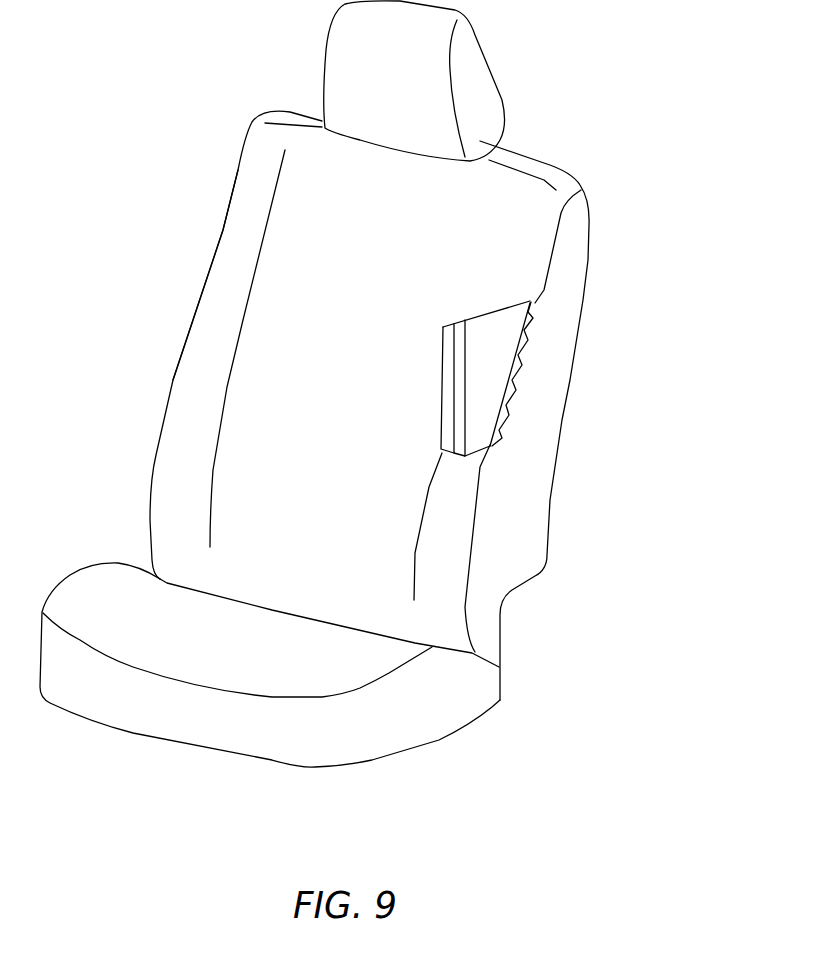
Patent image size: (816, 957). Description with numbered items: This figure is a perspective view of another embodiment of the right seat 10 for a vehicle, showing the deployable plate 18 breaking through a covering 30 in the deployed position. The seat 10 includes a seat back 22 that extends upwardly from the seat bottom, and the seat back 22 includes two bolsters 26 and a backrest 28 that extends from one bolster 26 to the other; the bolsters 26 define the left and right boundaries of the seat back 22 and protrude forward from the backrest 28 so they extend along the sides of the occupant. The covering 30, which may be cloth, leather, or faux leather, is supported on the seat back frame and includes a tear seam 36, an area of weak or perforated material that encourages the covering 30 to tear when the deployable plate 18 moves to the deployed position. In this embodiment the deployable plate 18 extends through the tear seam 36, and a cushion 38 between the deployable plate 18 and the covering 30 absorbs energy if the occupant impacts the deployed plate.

The seat 10 is at (85, 68).
The deployable plate 18 is at (498, 424).
The seat back 22 is at (594, 143).
The bolster 26 is at (197, 388).
The backrest 28 is at (391, 261).
The covering 30 is at (240, 240).
The tear seam 36 is at (513, 383).
The cushion 38 is at (439, 390).